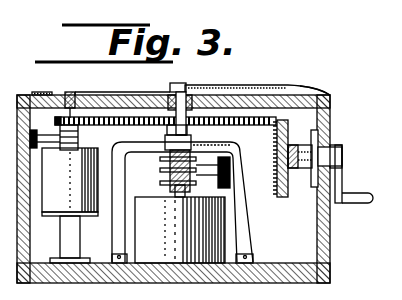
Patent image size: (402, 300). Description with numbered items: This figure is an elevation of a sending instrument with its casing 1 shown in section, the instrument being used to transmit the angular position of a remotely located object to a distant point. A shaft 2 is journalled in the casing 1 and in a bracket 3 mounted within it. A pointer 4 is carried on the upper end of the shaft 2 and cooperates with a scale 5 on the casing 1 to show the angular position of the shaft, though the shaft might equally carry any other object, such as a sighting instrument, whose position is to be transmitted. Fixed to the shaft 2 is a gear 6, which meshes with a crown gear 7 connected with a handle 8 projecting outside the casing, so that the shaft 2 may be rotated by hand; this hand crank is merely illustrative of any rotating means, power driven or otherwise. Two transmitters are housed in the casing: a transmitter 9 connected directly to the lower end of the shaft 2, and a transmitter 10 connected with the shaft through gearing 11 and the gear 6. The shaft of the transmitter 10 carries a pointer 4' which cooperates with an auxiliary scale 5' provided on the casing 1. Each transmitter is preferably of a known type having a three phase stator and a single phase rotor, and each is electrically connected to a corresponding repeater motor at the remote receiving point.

The casing 1 is at (331, 121).
The shaft 2 is at (170, 91).
The bracket 3 is at (243, 230).
The pointer 4 is at (202, 82).
The scale 5 is at (315, 86).
The pointer 4' is at (77, 108).
The auxiliary scale 5' is at (41, 82).
The gear 6 is at (241, 126).
The crown gear 7 is at (292, 127).
The handle 8 is at (364, 200).
The transmitter 9 is at (180, 230).
The transmitter 10 is at (64, 196).
The gearing 11 is at (55, 121).